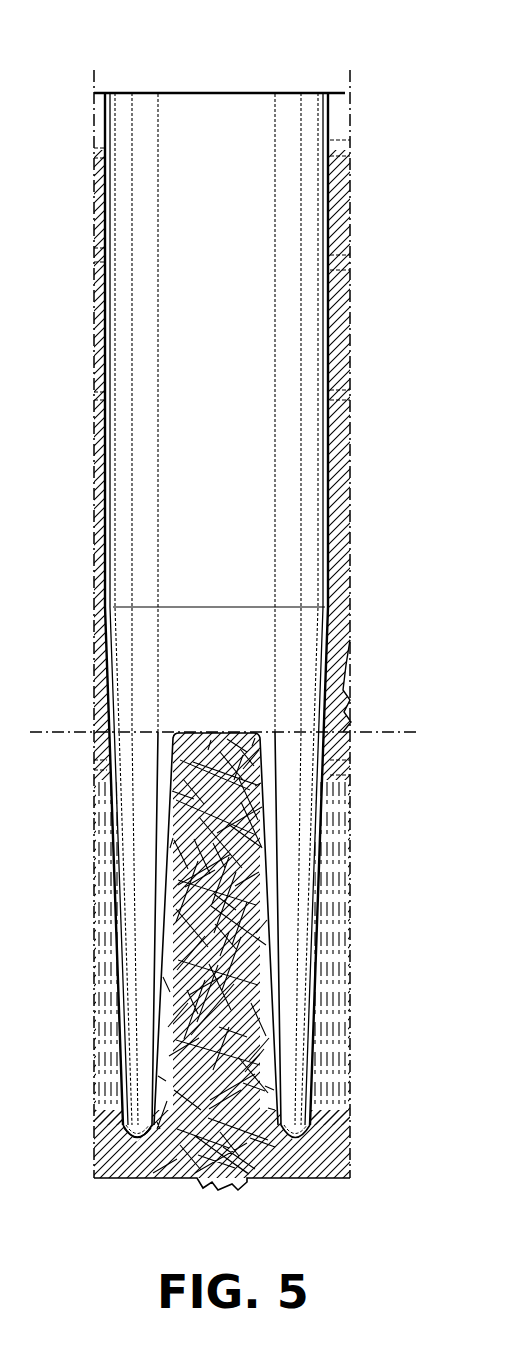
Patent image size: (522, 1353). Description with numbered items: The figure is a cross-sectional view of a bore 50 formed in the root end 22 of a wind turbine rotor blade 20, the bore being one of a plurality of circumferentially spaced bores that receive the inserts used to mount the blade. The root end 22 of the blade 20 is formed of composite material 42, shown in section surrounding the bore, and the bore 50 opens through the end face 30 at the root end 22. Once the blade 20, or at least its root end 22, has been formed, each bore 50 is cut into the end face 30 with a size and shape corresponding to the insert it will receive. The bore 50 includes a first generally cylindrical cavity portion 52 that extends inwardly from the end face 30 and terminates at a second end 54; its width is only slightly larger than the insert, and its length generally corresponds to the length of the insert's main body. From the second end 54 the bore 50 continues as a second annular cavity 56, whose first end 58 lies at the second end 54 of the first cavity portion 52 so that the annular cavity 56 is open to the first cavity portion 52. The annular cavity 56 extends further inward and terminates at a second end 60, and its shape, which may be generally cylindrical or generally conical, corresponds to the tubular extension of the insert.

The rotor blade 20 is at (336, 1163).
The root end 22 is at (96, 138).
The end face 30 is at (343, 93).
The composite material 42 is at (335, 1035).
The bore 50 is at (254, 329).
The first generally cylindrical cavity portion 52 is at (243, 453).
The second end 54 is at (153, 732).
The second annular cavity 56 is at (290, 880).
The first end 58 is at (287, 733).
The second end 60 is at (137, 1143).